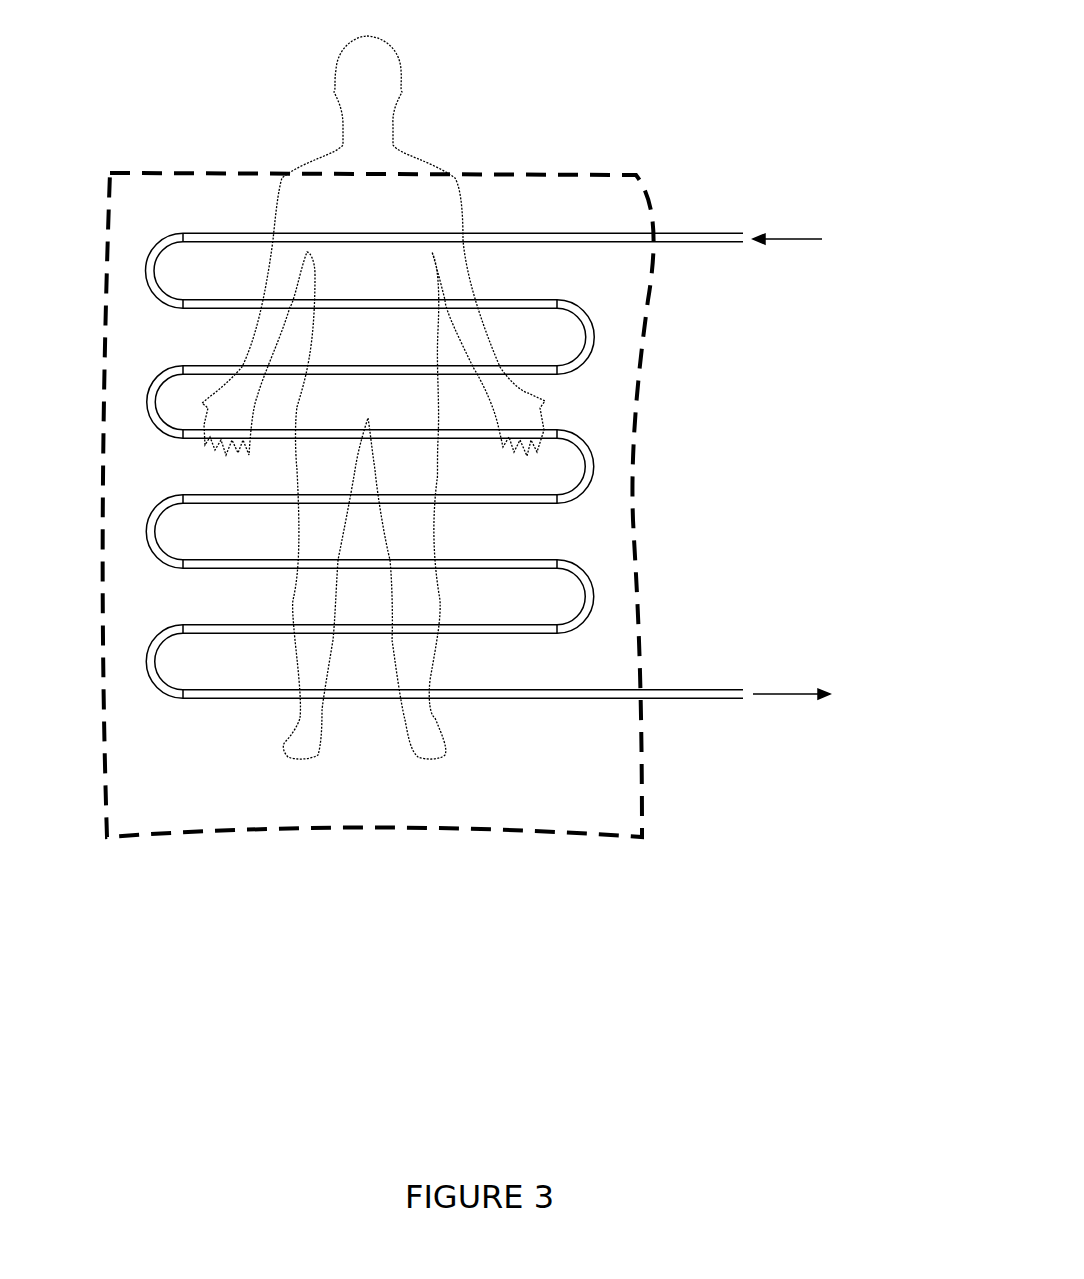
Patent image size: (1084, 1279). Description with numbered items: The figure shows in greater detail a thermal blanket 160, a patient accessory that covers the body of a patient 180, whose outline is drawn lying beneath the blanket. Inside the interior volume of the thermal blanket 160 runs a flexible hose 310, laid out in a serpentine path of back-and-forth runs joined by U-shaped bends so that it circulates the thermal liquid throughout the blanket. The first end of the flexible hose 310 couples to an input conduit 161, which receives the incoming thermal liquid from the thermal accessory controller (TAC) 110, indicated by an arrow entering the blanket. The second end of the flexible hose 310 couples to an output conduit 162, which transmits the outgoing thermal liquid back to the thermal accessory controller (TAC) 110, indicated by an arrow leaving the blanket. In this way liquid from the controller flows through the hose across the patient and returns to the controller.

The thermal blanket 160 is at (147, 835).
The input conduit 161 is at (688, 233).
The output conduit 162 is at (672, 690).
The patient 180 is at (392, 50).
The flexible hose 310 is at (535, 558).
The thermal accessory controller (TAC) 110 is at (855, 466).